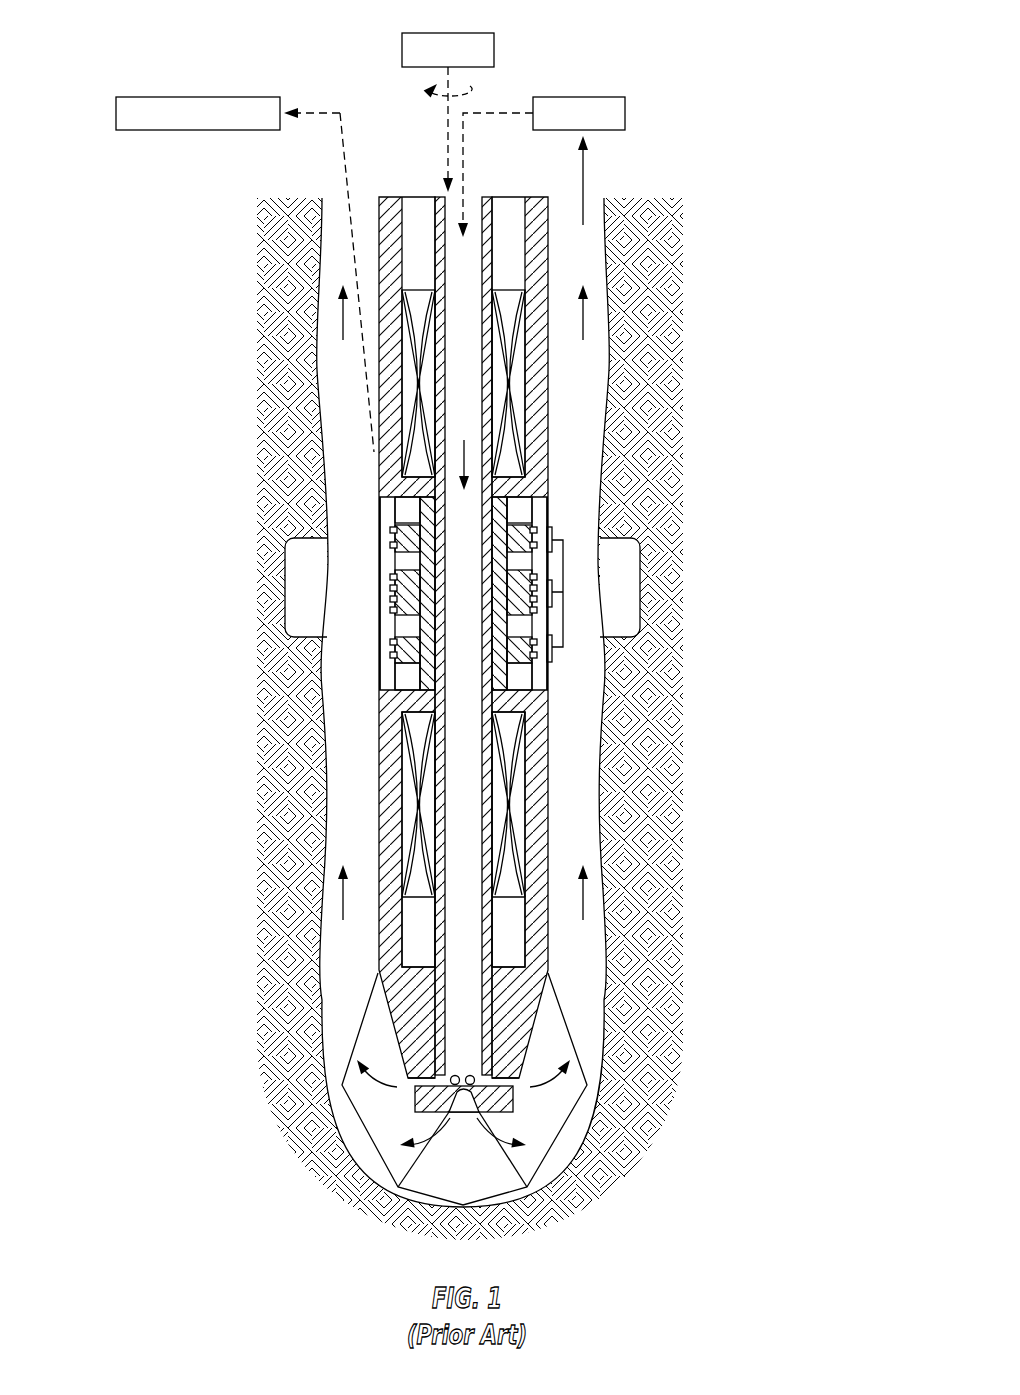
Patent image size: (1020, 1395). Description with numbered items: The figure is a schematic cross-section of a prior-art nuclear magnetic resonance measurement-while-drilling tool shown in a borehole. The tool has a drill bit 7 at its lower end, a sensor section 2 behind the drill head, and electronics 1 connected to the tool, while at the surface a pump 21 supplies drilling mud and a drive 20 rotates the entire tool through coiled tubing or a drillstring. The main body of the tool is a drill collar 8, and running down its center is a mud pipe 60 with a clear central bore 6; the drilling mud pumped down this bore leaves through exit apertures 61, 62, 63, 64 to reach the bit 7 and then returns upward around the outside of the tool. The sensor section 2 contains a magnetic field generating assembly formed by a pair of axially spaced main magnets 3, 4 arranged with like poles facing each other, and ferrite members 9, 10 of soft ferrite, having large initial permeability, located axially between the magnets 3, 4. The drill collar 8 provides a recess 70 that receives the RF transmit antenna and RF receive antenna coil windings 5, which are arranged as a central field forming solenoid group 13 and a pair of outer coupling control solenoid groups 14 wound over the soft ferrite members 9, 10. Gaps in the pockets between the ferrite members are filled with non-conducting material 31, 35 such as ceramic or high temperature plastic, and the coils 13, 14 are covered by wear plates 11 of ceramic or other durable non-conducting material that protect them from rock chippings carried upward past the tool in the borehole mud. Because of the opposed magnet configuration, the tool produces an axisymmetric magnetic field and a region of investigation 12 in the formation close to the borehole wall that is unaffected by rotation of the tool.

The electronics 1 is at (140, 97).
The drive 20 is at (425, 33).
The pump 21 is at (603, 97).
The sensor section 2 is at (344, 395).
The main magnet 3 is at (508, 317).
The drill collar 8 is at (542, 407).
The wear plates 11 is at (542, 508).
The RF transmit antenna and RF receive antenna coil windings 5 is at (553, 537).
The non-conducting material 35 is at (553, 563).
The region of investigation 12 is at (635, 610).
The recess 70 is at (548, 682).
The central bore 6 is at (467, 825).
The main magnet 4 is at (510, 870).
The mud pipe 60 is at (503, 1075).
The exit aperture 64 is at (500, 990).
The exit aperture 61 is at (408, 1077).
The exit aperture 62 is at (398, 1187).
The exit aperture 63 is at (530, 1190).
The drill bit 7 is at (468, 1167).
The non-conducting material 31 is at (380, 505).
The coupling control solenoid groups 14 is at (368, 513).
The ferrite member 10 is at (388, 538).
The field forming solenoid group 13 is at (368, 583).
The ferrite member 9 is at (388, 600).